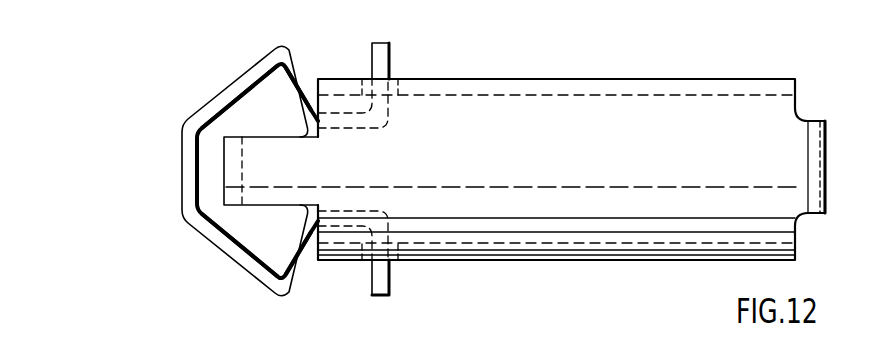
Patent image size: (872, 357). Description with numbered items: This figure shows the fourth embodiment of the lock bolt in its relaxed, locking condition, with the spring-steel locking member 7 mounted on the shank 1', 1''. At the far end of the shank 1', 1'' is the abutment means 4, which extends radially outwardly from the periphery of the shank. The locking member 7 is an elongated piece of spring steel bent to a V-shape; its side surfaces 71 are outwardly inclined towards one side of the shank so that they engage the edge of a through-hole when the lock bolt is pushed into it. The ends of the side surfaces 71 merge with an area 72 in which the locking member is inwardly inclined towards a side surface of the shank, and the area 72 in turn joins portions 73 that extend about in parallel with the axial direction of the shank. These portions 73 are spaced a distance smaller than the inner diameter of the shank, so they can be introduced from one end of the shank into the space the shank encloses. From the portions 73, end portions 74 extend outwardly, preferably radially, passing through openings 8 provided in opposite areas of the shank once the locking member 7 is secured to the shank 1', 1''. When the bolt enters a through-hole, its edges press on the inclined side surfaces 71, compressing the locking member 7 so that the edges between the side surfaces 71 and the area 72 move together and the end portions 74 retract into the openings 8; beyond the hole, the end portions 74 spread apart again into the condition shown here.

The locking member 7 is at (174, 222).
The side surfaces 71 is at (222, 97).
The area 72 is at (303, 82).
The portions 73 is at (367, 126).
The end portions 74 is at (374, 53).
The openings 8 is at (398, 92).
The shank 1' is at (524, 146).
The shank 1'' is at (556, 260).
The abutment means 4 is at (818, 150).